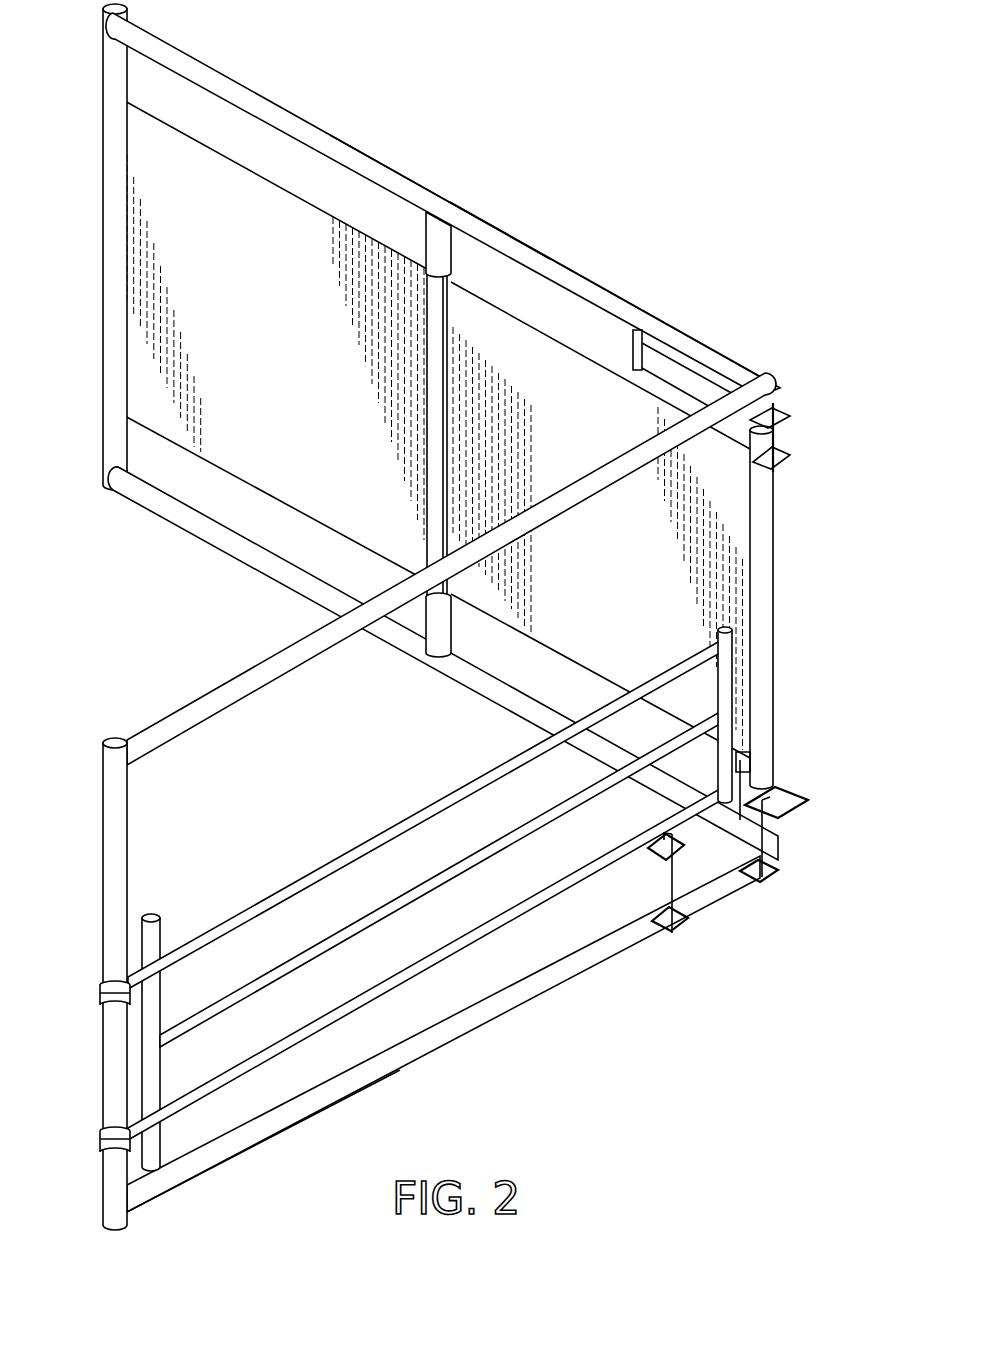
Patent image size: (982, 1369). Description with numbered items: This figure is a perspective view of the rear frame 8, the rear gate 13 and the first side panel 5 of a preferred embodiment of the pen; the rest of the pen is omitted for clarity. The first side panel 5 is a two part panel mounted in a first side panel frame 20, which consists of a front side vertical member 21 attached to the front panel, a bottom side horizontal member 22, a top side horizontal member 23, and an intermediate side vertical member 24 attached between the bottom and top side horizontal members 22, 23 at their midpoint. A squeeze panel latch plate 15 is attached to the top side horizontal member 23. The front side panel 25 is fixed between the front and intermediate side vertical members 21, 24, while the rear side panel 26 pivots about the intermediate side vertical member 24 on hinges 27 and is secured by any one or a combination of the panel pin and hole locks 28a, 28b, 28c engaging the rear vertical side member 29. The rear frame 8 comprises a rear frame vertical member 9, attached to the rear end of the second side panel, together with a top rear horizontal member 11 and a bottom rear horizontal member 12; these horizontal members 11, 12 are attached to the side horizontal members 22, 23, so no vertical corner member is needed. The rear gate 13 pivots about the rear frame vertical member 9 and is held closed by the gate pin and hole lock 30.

The first side panel 5 is at (398, 172).
The rear frame 8 is at (143, 1200).
The rear frame vertical member 9 is at (107, 1057).
The top rear horizontal member 11 is at (172, 722).
The bottom rear horizontal member 12 is at (370, 1070).
The rear gate 13 is at (468, 943).
The squeeze panel latch plate 15 is at (632, 353).
The first side panel frame 20 is at (452, 202).
The front side vertical member 21 is at (108, 80).
The bottom side horizontal member 22 is at (173, 513).
The top side horizontal member 23 is at (263, 103).
The intermediate side vertical member 24 is at (450, 253).
The front side panel 25 is at (277, 277).
The rear side panel 26 is at (603, 432).
The hinges 27 is at (452, 282).
The panel pin and hole lock 28a is at (777, 410).
The panel pin and hole lock 28b is at (773, 787).
The panel pin and hole lock 28c is at (777, 845).
The rear vertical side member 29 is at (767, 605).
The gate pin and hole lock 30 is at (677, 920).